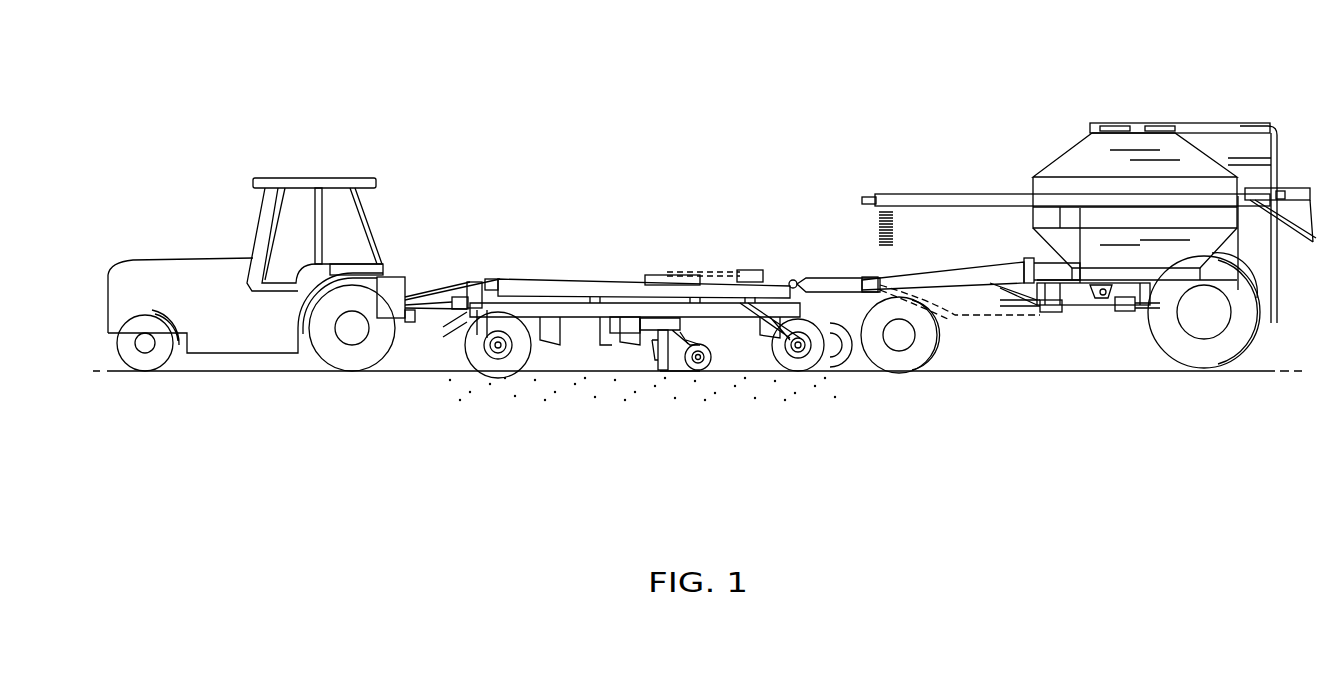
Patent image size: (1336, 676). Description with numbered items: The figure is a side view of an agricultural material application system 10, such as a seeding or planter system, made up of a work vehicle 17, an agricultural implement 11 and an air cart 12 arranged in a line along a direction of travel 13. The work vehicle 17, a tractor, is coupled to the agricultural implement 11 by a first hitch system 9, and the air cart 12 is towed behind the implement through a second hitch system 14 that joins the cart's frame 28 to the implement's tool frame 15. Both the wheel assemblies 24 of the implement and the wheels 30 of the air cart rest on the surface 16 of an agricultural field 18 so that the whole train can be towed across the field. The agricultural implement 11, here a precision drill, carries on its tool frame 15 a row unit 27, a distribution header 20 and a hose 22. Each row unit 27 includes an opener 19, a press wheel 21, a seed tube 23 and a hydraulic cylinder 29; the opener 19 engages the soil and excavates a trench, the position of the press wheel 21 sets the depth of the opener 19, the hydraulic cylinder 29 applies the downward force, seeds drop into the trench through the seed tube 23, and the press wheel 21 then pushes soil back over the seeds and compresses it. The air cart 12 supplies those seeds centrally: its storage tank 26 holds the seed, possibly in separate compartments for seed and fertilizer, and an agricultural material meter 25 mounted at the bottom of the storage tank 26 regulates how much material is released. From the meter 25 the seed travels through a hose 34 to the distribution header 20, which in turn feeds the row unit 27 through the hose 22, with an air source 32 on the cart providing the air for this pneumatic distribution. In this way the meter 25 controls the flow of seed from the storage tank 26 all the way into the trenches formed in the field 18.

The first hitch system 9 is at (436, 288).
The agricultural material application system 10 is at (623, 232).
The agricultural implement 11 is at (551, 279).
The air cart 12 is at (1062, 124).
The direction of travel 13 is at (723, 178).
The second hitch system 14 is at (794, 282).
The tool frame 15 is at (650, 284).
The surface 16 is at (1060, 373).
The work vehicle 17 is at (311, 166).
The agricultural field 18 is at (878, 477).
The opener 19 is at (658, 371).
The distribution header 20 is at (750, 269).
The press wheel 21 is at (718, 354).
The hose 22 is at (701, 270).
The seed tube 23 is at (683, 352).
The wheel assemblies 24 is at (806, 330).
The agricultural material meter 25 is at (1101, 300).
The storage tank 26 is at (1085, 155).
The row unit 27 is at (641, 353).
The frame 28 is at (946, 270).
The hydraulic cylinder 29 is at (620, 337).
The wheels 30 is at (938, 341).
The air source 32 is at (1252, 263).
The hose 34 is at (1002, 334).